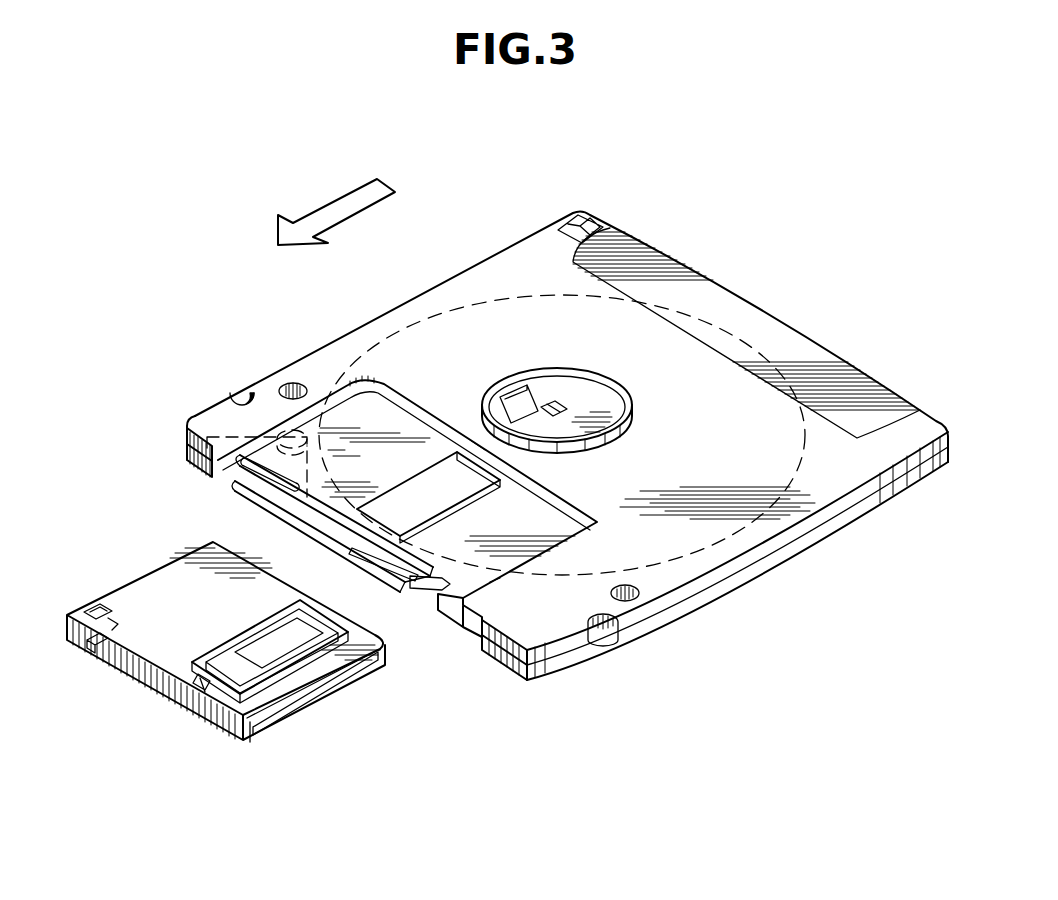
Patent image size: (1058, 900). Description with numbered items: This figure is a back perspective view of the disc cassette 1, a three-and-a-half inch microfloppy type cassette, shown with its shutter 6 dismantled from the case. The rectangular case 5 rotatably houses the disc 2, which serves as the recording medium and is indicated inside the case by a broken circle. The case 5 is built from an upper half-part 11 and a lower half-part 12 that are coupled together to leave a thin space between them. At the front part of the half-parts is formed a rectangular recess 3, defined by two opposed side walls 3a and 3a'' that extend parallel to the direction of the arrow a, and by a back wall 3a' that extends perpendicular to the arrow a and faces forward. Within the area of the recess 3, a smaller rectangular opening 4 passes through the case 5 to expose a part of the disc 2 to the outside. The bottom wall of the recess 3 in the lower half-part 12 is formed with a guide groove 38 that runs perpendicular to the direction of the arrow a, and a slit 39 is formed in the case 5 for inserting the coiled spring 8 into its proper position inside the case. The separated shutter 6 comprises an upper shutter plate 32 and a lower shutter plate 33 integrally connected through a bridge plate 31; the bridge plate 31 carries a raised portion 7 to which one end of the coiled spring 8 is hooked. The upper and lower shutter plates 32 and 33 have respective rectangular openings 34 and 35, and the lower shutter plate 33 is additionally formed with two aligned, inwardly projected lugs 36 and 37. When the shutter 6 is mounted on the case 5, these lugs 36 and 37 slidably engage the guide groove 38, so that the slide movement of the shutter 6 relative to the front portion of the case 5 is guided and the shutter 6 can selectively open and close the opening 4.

The disc cassette 1 is at (746, 282).
The disc 2 is at (518, 297).
The rectangular recess 3 is at (375, 416).
The side wall 3a is at (324, 377).
The back wall 3a' is at (463, 337).
The side wall 3a'' is at (513, 652).
The rectangular opening 4 is at (447, 473).
The case 5 is at (168, 305).
The shutter 6 is at (145, 560).
The raised portion 7 is at (120, 633).
The coiled spring 8 is at (228, 402).
The upper half-part 11 is at (186, 458).
The lower half-part 12 is at (196, 432).
The bridge plate 31 is at (232, 740).
The upper shutter plate 32 is at (320, 702).
The lower shutter plate 33 is at (285, 700).
The rectangular opening 34 is at (300, 625).
The rectangular opening 35 is at (230, 636).
The lug 36 is at (92, 623).
The lug 37 is at (207, 684).
The guide groove 38 is at (248, 464).
The slit 39 is at (268, 498).
The arrow a is at (336, 200).